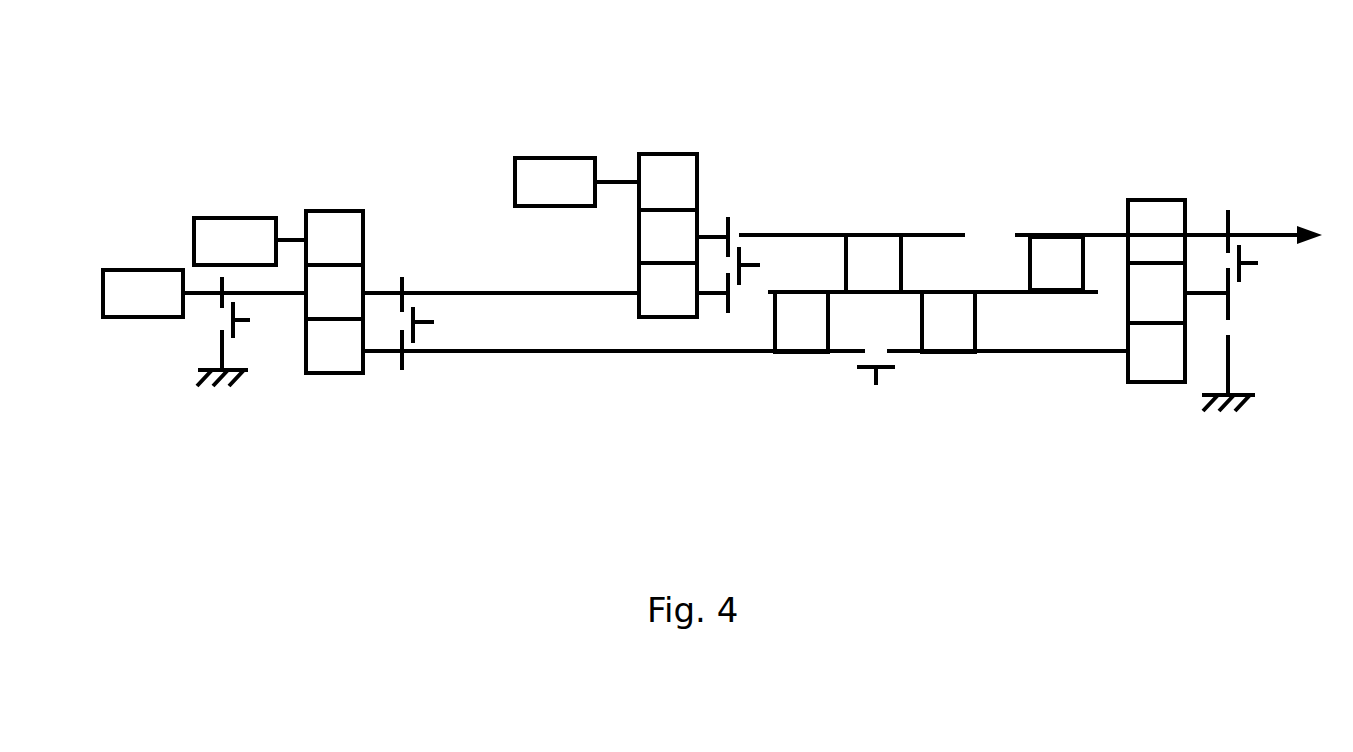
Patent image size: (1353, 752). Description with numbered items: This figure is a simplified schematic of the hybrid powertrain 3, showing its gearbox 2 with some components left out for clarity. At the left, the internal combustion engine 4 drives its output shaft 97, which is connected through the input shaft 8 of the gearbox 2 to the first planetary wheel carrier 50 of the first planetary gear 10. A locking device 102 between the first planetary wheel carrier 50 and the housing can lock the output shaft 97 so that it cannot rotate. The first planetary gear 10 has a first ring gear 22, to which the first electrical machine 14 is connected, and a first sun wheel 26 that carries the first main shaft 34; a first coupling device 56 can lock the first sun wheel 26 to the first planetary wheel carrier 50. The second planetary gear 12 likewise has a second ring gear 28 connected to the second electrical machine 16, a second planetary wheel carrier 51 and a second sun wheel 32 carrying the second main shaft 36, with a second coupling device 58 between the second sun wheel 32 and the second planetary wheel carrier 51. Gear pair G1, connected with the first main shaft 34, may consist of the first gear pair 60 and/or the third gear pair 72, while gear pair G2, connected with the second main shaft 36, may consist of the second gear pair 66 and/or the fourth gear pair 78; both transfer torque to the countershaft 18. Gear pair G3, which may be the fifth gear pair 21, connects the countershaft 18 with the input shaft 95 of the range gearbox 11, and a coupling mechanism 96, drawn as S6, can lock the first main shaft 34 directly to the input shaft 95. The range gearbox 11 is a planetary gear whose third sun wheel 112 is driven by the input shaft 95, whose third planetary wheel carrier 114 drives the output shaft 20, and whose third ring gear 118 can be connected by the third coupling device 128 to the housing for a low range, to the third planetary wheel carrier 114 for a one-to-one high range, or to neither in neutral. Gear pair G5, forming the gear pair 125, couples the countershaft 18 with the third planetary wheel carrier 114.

The gearbox 2 is at (798, 112).
The hybrid powertrain 3 is at (620, 63).
The internal combustion engine 4 is at (125, 278).
The input shaft 8 is at (273, 289).
The first planetary gear 10 is at (367, 283).
The range gearbox 11 is at (1096, 281).
The second planetary gear 12 is at (676, 236).
The first electrical machine 14 is at (237, 227).
The second electrical machine 16 is at (549, 170).
The countershaft 18 is at (997, 290).
The output shaft 20 is at (1265, 233).
The fifth gear pair 21 is at (958, 337).
The first ring gear 22 is at (348, 238).
The first sun wheel 26 is at (335, 360).
The second ring gear 28 is at (688, 182).
The second sun wheel 32 is at (677, 305).
The first main shaft 34 is at (530, 352).
The second main shaft 36 is at (795, 235).
The first planetary wheel carrier 50 is at (348, 289).
The second planetary wheel carrier 51 is at (646, 242).
The first coupling device 56 is at (421, 327).
The second coupling device 58 is at (757, 265).
The first gear pair 60 is at (801, 389).
The second gear pair 66 is at (880, 199).
The third gear pair 72 is at (802, 335).
The fourth gear pair 78 is at (877, 247).
The input shaft of the range gearbox 95 is at (1072, 353).
The coupling mechanism 96 is at (877, 383).
The output shaft of the internal combustion engine 97 is at (202, 297).
The locking device 102 is at (250, 318).
The third sun wheel 112 is at (1157, 383).
The third planetary wheel carrier 114 is at (1127, 227).
The third ring gear 118 is at (1128, 307).
The seventh gear pair 125 is at (1062, 242).
The third coupling device 128 is at (1253, 265).
The gear pair G1 is at (801, 389).
The gear pair G2 is at (880, 199).
The gear pair G3 is at (974, 372).
The gear pair G5 is at (1035, 224).
The shift element S6 is at (897, 431).